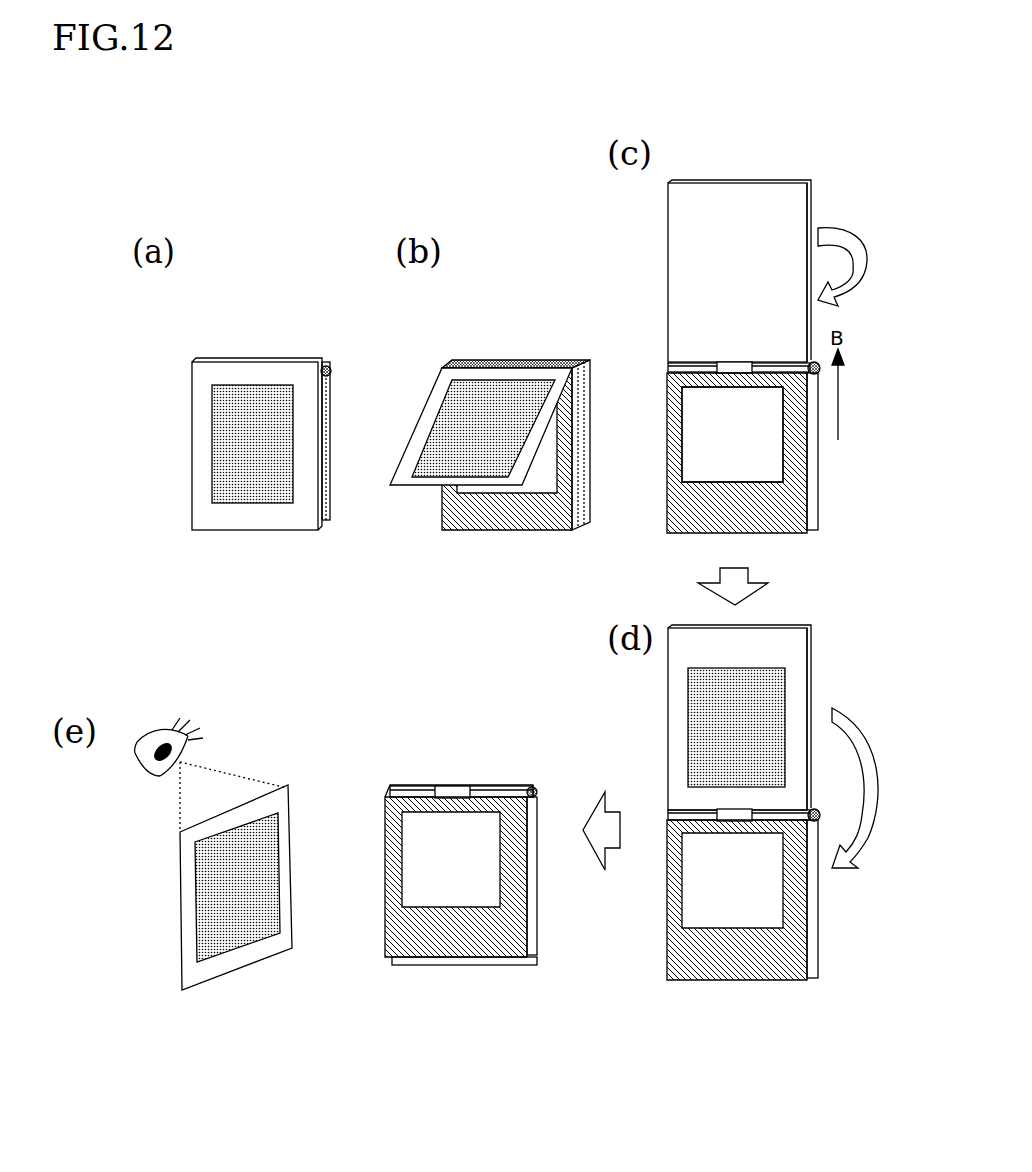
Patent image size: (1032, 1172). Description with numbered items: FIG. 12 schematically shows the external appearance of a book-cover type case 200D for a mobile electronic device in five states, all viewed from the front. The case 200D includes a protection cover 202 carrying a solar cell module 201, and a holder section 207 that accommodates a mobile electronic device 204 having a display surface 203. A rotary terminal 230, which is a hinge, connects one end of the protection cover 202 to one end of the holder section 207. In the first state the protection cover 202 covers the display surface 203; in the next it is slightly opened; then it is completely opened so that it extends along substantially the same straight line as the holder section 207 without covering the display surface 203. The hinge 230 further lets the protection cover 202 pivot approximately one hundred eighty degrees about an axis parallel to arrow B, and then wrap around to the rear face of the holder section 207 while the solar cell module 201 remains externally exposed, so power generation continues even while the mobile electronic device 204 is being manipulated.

The case for a mobile electronic device 200D is at (473, 205).
The solar cell module 201 is at (216, 483).
The protection cover 202 is at (235, 520).
The display surface 203 is at (770, 453).
The mobile electronic device 204 is at (768, 518).
The holder section 207 is at (433, 522).
The rotary terminal 230 is at (723, 362).